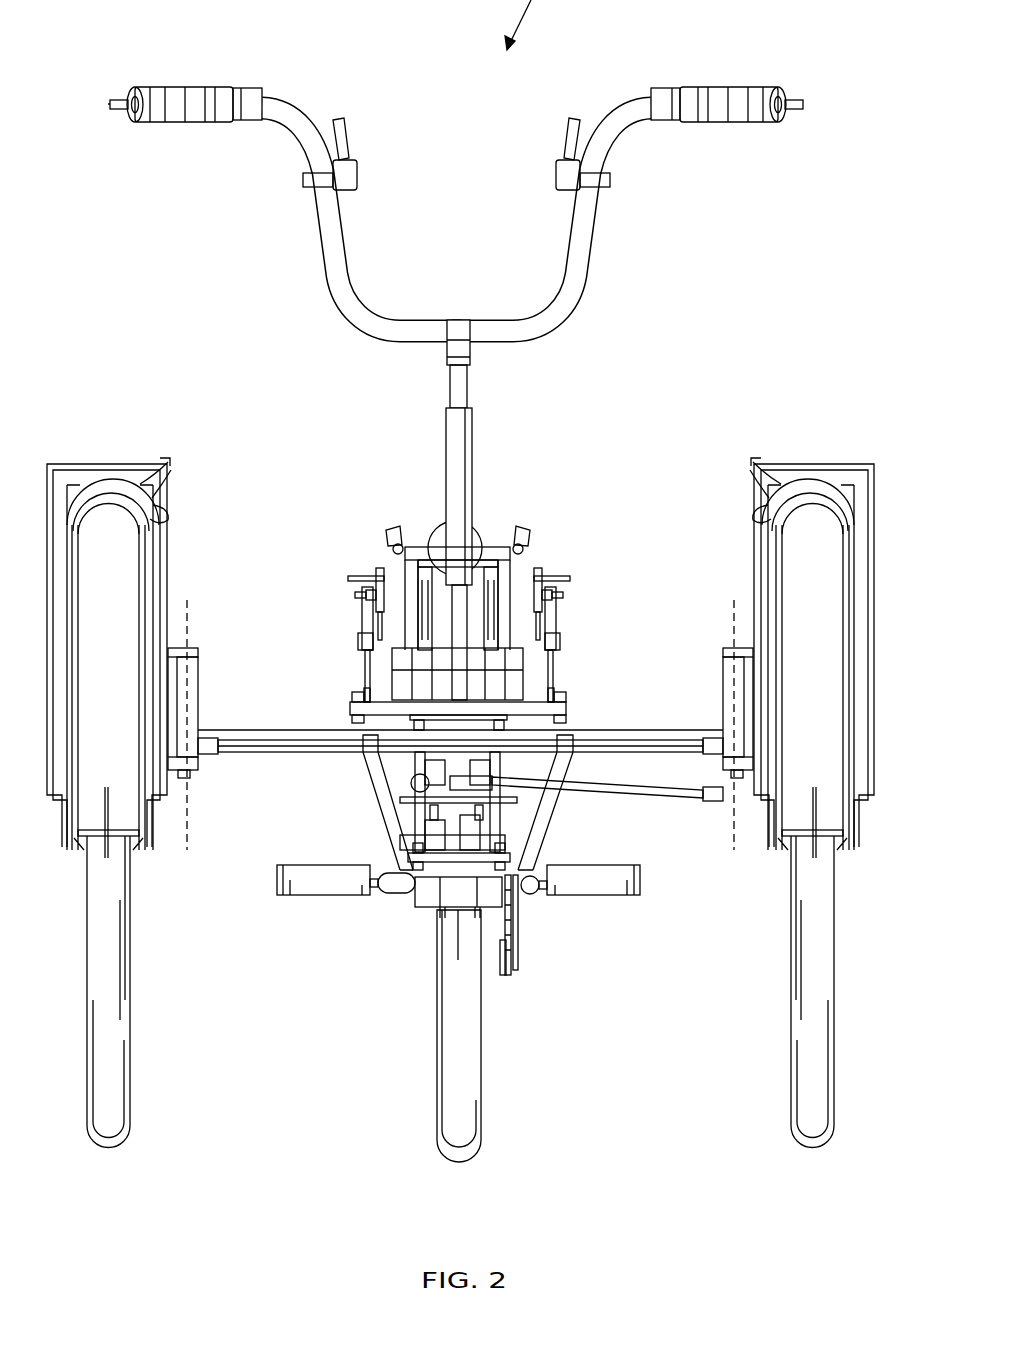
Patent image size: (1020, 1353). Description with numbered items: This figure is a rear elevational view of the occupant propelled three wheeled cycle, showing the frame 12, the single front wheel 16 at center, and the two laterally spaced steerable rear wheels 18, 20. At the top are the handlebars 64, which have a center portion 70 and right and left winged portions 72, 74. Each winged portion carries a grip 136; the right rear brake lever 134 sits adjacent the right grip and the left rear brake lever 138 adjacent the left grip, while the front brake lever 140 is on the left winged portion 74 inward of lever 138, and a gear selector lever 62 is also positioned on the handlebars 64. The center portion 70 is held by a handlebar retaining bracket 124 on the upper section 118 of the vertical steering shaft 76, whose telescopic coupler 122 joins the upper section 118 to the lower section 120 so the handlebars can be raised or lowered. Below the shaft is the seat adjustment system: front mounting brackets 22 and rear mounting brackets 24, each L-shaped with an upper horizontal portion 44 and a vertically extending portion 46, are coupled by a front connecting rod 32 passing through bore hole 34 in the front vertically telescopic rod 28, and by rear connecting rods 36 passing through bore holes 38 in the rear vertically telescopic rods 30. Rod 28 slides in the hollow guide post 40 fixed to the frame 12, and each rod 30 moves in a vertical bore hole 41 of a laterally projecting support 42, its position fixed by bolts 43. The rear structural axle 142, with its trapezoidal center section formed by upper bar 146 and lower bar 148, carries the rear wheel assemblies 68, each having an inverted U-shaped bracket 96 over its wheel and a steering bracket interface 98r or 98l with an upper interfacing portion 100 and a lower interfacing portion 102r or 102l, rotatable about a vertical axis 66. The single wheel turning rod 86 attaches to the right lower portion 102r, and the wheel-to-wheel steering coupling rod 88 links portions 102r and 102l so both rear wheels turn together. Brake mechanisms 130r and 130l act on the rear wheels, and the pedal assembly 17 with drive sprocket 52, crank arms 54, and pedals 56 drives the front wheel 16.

The frame 12 is at (655, 730).
The front wheel 16 is at (467, 1104).
The pedal assembly 17 is at (520, 895).
The rear wheel 18 is at (118, 1066).
The rear wheel 20 is at (790, 1051).
The front mounting brackets 22 is at (404, 560).
The rear mounting brackets 24 is at (362, 580).
The front vertically telescopic rod 28 is at (470, 625).
The rear vertically telescopic rods 30 is at (373, 632).
The front connecting rod 32 is at (443, 545).
The horizontal bore hole 34 is at (453, 563).
The rear connecting rod 36 is at (358, 598).
The horizontal bore hole 38 is at (368, 595).
The hollow guide post 40 is at (470, 660).
The vertical bore hole 41 is at (366, 700).
The laterally projecting support 42 is at (352, 708).
The bolts 43 is at (355, 695).
The upper horizontal portion 44 is at (372, 576).
The vertically extending portion 46 is at (364, 612).
The drive sprocket 52 is at (497, 950).
The crank arms 54 is at (535, 877).
The pedals 56 is at (305, 895).
The gear selector lever 62 is at (562, 136).
The handlebars 64 is at (619, 116).
The vertical axis 66 is at (188, 612).
The rear wheel assemblies 68 is at (168, 560).
The center portion 70 is at (460, 202).
The right winged portion 72 is at (588, 237).
The left winged portion 74 is at (335, 222).
The vertical steering shaft 76 is at (448, 452).
The single wheel turning rod 86 is at (703, 798).
The wheel-to-wheel steering coupling rod 88 is at (630, 748).
The inverted U-shaped bracket 96 is at (135, 462).
The left steering bracket interface 98l is at (203, 720).
The right steering bracket interface 98r is at (723, 681).
The upper interfacing portion 100 is at (192, 648).
The lower interfacing portion 102l is at (198, 765).
The lower interfacing portion 102r is at (724, 766).
The upper section 118 is at (450, 372).
The lower section 120 is at (440, 543).
The telescopic coupler 122 is at (446, 425).
The handlebar retaining bracket 124 is at (470, 350).
The brake mechanism 130l is at (108, 478).
The brake mechanism 130r is at (813, 478).
The right rear brake lever 134 is at (801, 97).
The grip 136 is at (225, 115).
The left rear brake lever 138 is at (116, 98).
The front brake lever 140 is at (349, 140).
The rear structural axle 142 is at (432, 802).
The upper bar 146 is at (380, 737).
The lower bar 148 is at (406, 860).